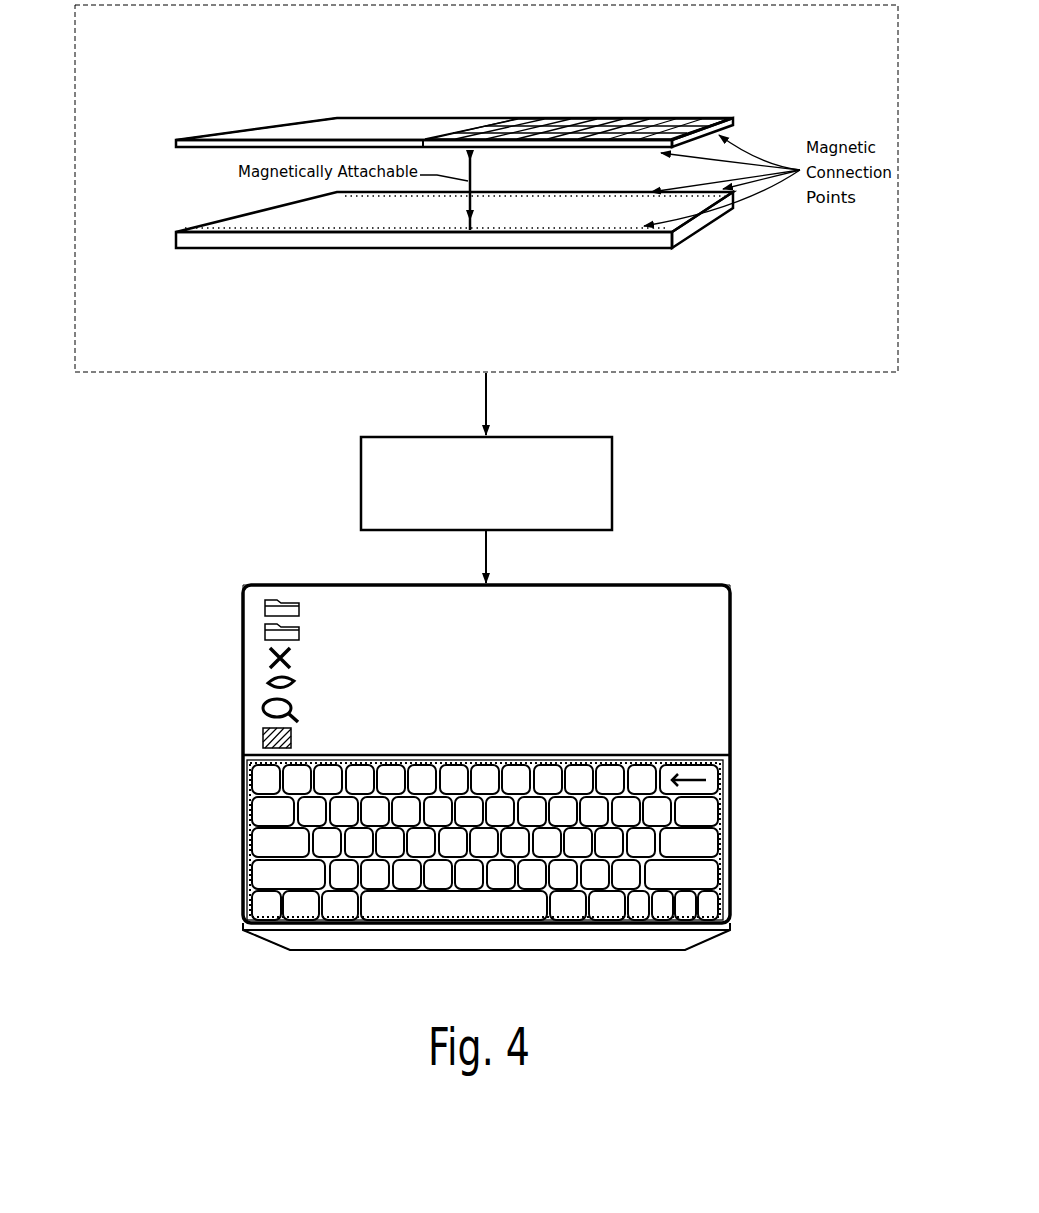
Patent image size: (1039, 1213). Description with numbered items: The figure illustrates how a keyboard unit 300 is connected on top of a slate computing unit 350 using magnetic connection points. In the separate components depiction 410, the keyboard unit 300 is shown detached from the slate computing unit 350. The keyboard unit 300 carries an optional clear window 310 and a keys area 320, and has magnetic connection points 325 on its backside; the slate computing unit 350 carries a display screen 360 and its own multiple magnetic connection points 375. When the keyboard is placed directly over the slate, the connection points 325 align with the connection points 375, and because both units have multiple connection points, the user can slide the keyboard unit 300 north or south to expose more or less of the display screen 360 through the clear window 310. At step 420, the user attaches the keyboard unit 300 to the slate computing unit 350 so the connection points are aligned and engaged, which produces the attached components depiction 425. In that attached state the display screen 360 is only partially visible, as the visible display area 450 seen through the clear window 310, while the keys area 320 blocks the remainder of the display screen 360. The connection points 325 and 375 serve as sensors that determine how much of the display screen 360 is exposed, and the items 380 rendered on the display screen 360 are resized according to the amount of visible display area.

The keyboard unit 300 is at (787, 937).
The clear window 310 is at (376, 128).
The keys area 320 is at (608, 128).
The magnetic connection points 325 is at (735, 138).
The slate computing unit 350 is at (770, 1022).
The display screen 360 is at (339, 216).
The magnetic connection points 375 is at (670, 226).
The visible items 380 is at (248, 601).
The separate components depiction 410 is at (486, 188).
The attach step 420 is at (486, 510).
The attached components depiction 425 is at (345, 968).
The visible display area 450 is at (609, 610).